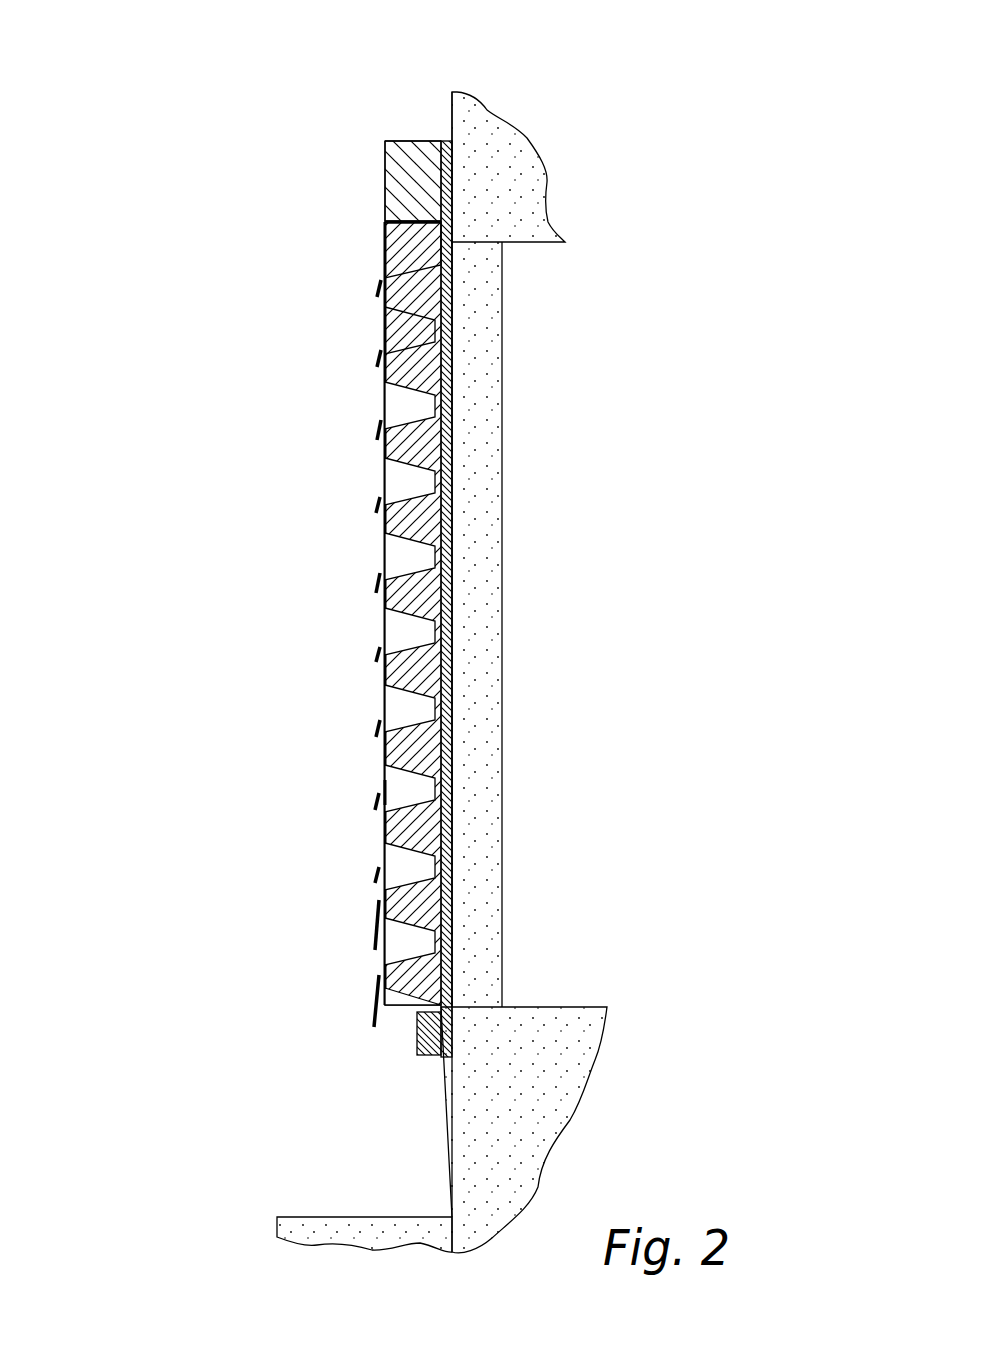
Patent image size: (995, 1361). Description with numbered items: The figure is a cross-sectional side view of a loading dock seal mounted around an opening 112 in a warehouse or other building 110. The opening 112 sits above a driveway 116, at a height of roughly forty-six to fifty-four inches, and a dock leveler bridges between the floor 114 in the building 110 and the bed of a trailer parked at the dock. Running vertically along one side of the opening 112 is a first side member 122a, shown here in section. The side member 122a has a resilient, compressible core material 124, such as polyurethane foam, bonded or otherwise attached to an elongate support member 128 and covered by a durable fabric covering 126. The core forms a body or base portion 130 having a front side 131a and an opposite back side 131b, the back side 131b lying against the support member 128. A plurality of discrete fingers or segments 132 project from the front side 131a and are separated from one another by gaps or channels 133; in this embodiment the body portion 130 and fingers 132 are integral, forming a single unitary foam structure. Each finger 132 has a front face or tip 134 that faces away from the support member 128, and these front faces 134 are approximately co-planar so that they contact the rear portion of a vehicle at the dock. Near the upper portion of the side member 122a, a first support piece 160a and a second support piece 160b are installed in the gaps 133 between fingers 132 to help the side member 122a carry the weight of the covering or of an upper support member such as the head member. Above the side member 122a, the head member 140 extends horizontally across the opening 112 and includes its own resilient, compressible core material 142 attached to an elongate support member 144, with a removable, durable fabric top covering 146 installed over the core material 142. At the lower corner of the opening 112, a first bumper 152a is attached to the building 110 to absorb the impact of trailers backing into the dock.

The building 110 is at (451, 634).
The opening 112 is at (564, 623).
The floor 114 is at (545, 1007).
The driveway 116 is at (320, 1217).
The first side member 122a is at (326, 599).
The compressible core material 124 is at (339, 613).
The covering 126 is at (383, 485).
The support member 128 is at (448, 437).
The body portion 130 is at (452, 560).
The front side 131a is at (395, 793).
The back side 131b is at (447, 785).
The fingers 132 is at (383, 525).
The gaps 133 is at (390, 472).
The front face 134 is at (383, 448).
The head member 140 is at (355, 132).
The compressible core material 142 is at (402, 163).
The support member 144 is at (452, 107).
The top covering 146 is at (385, 180).
The first bumper 152a is at (417, 1038).
The first support piece 160a is at (410, 248).
The second support piece 160b is at (403, 332).